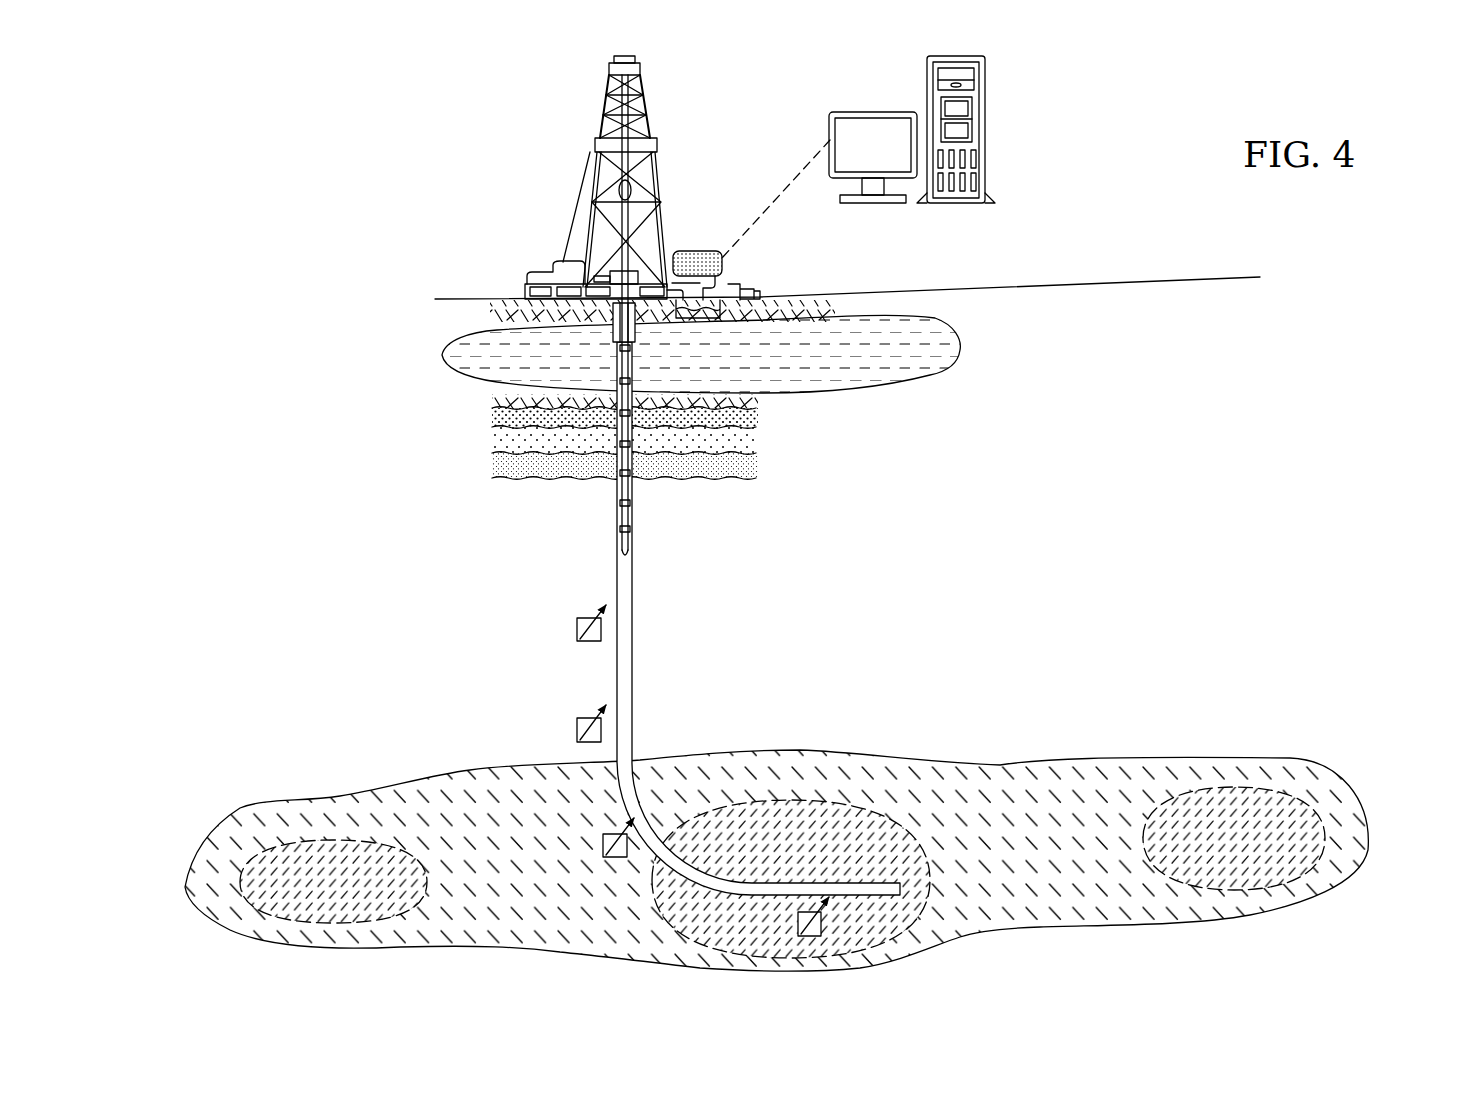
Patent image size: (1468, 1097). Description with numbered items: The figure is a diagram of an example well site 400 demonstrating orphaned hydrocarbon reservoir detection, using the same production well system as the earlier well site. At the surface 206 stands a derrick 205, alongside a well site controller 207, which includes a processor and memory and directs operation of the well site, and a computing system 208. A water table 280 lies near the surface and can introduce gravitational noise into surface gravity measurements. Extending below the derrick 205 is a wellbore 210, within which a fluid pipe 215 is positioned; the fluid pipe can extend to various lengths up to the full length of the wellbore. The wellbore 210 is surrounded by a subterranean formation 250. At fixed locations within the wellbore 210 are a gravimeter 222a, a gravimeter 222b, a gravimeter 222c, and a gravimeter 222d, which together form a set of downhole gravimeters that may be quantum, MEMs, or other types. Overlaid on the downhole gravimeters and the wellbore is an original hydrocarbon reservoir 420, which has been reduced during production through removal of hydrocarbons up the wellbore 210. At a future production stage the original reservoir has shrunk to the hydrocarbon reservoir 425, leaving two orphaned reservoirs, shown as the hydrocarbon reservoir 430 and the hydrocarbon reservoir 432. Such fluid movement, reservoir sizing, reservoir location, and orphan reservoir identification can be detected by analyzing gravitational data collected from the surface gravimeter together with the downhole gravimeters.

The well site 400 is at (335, 165).
The derrick 205 is at (593, 147).
The surface 206 is at (485, 298).
The well site controller 207 is at (697, 250).
The computing system 208 is at (987, 130).
The wellbore 210 is at (633, 510).
The fluid pipe 215 is at (617, 568).
The gravimeter 222a is at (577, 630).
The gravimeter 222b is at (577, 728).
The gravimeter 222c is at (603, 845).
The gravimeter 222d is at (798, 920).
The subterranean formation 250 is at (773, 443).
The water table 280 is at (958, 348).
The original hydrocarbon reservoir 420 is at (1090, 754).
The hydrocarbon reservoir 425 is at (807, 806).
The hydrocarbon reservoir 430 is at (240, 876).
The hydrocarbon reservoir 432 is at (1317, 827).